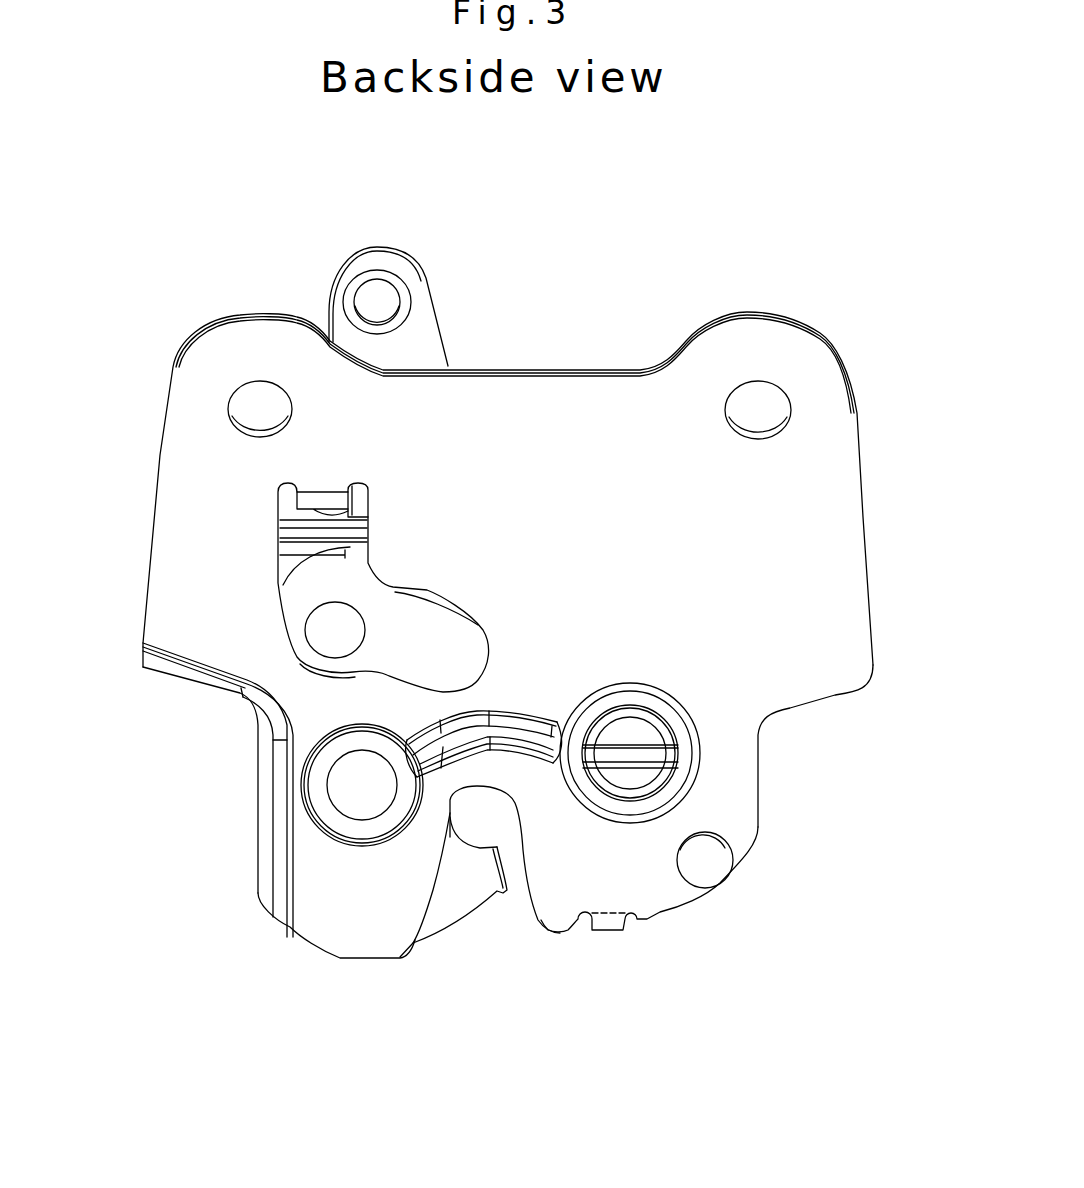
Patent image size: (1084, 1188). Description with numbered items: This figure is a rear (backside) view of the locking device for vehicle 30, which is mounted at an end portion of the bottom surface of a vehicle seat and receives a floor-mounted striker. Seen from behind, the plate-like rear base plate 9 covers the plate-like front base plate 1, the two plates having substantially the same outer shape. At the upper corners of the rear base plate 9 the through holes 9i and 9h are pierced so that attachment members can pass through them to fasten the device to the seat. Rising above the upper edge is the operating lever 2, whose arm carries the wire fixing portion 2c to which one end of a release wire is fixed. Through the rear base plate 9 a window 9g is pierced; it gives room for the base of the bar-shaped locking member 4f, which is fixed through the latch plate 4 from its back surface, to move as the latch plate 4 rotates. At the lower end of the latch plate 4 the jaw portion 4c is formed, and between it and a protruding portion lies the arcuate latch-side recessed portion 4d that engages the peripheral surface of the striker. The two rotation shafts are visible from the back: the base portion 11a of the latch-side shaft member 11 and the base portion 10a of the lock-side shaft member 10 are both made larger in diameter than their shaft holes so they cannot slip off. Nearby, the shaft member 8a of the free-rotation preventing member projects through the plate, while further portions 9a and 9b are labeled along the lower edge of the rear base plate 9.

The locking device for vehicle 30 is at (244, 234).
The front base plate 1 is at (772, 310).
The operating lever 2 is at (424, 268).
The wire fixing portion 2c is at (374, 290).
The rear base plate 9 is at (848, 527).
The through hole 9i is at (245, 382).
The through hole 9h is at (787, 387).
The window 9g is at (261, 698).
The bottom edge portion 9b is at (343, 943).
The notched edge portion 9a is at (663, 908).
The shaft member 8a is at (710, 867).
The latch plate 4 is at (300, 585).
The locking member 4f is at (320, 632).
The jaw portion 4c is at (507, 897).
The latch-side recessed portion 4d is at (458, 847).
The latch-side shaft member 11 is at (327, 823).
The base portion 11a is at (350, 795).
The lock-side shaft member 10 is at (683, 720).
The base portion 10a is at (663, 757).